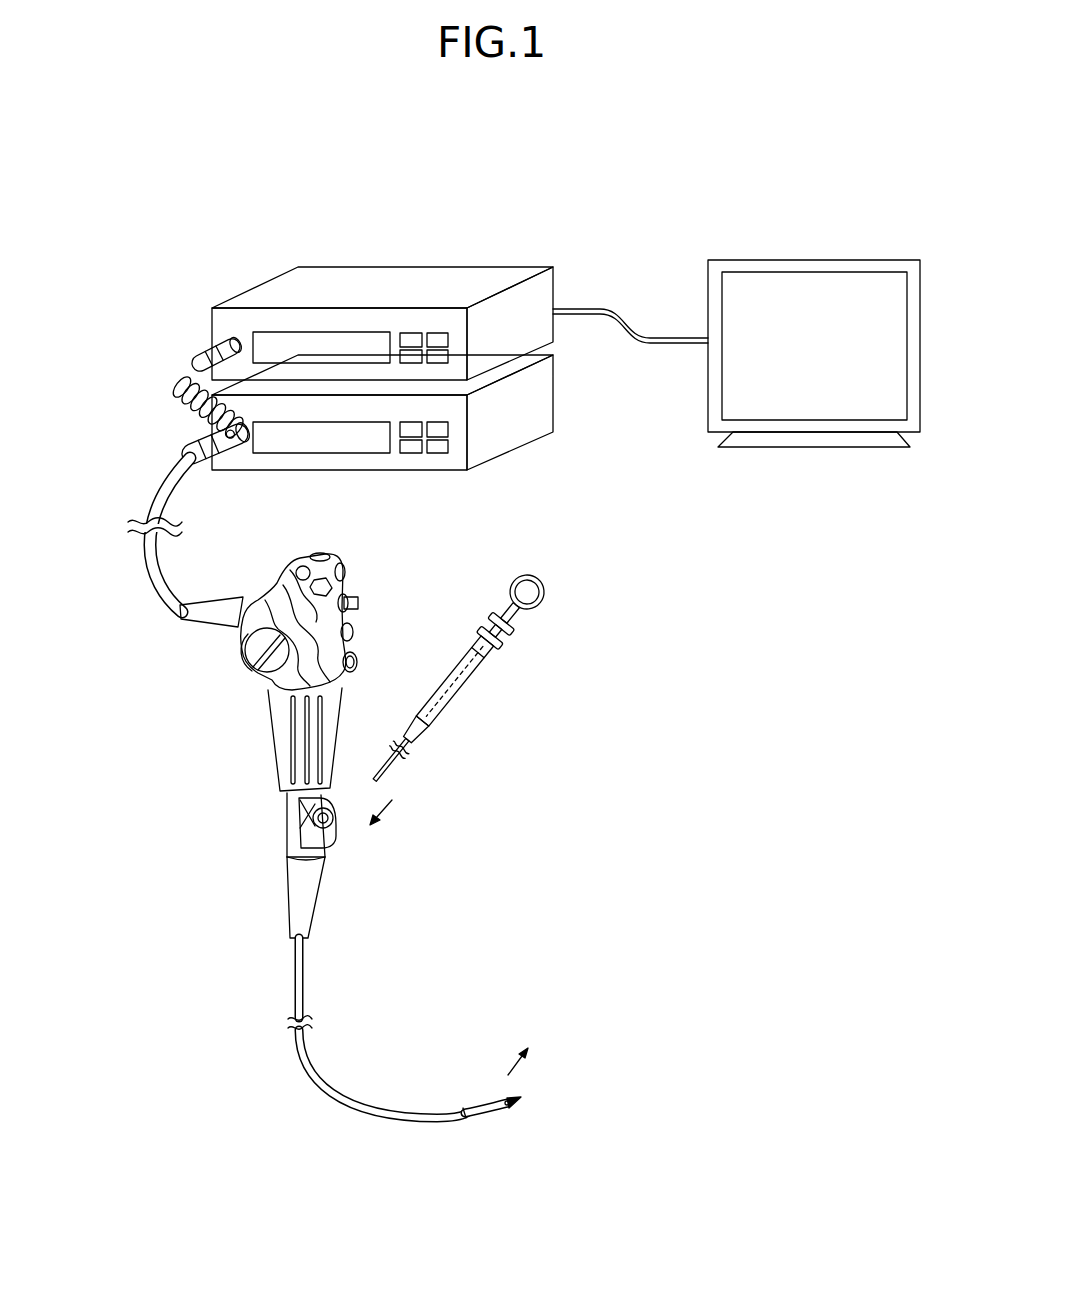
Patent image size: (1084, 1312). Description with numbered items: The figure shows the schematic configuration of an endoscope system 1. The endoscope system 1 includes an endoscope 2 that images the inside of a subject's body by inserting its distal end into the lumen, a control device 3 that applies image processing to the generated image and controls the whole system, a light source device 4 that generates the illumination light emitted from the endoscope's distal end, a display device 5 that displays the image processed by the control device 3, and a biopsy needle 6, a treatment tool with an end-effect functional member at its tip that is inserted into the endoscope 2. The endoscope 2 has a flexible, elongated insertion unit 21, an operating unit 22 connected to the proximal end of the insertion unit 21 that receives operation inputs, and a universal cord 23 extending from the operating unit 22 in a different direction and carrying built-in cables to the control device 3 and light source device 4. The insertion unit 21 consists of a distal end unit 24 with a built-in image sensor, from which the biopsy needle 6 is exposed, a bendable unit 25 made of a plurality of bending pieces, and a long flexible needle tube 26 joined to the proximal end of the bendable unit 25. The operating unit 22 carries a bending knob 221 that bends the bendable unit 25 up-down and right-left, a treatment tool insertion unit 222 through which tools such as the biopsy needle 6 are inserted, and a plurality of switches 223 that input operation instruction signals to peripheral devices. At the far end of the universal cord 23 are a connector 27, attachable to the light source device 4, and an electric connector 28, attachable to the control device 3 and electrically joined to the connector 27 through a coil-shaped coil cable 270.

The endoscope system 1 is at (617, 181).
The endoscope 2 is at (414, 576).
The control device 3 is at (521, 275).
The light source device 4 is at (542, 397).
The display device 5 is at (816, 260).
The biopsy needle 6 is at (546, 643).
The insertion unit 21 is at (408, 1064).
The operating unit 22 is at (312, 716).
The universal cord 23 is at (143, 560).
The distal end unit 24 is at (507, 1112).
The bendable unit 25 is at (483, 1107).
The flexible needle tube 26 is at (348, 1100).
The connector 27 is at (214, 452).
The electric connector 28 is at (226, 340).
The bending knob 221 is at (252, 668).
The treatment tool insertion unit 222 is at (333, 824).
The switches 223 is at (353, 630).
The coil cable 270 is at (178, 393).